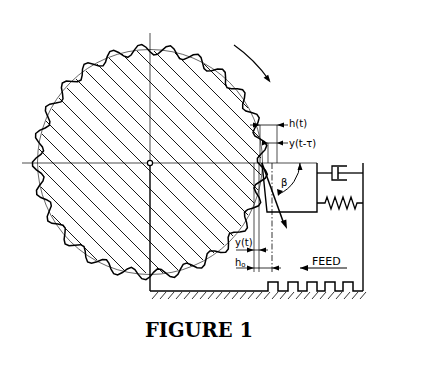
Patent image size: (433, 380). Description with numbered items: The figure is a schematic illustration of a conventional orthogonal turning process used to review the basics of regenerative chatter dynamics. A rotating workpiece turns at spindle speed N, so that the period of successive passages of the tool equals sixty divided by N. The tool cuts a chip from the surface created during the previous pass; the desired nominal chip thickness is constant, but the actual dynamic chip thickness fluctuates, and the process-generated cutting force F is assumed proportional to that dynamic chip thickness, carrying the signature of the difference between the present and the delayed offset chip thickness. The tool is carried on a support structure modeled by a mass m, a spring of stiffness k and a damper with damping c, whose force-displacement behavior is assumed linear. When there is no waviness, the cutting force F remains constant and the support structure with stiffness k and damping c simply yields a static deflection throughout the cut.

The mass m is at (289, 187).
The stiffness k is at (340, 212).
The damping c is at (340, 165).
The cutting force F is at (277, 205).
The spindle speed N is at (252, 64).